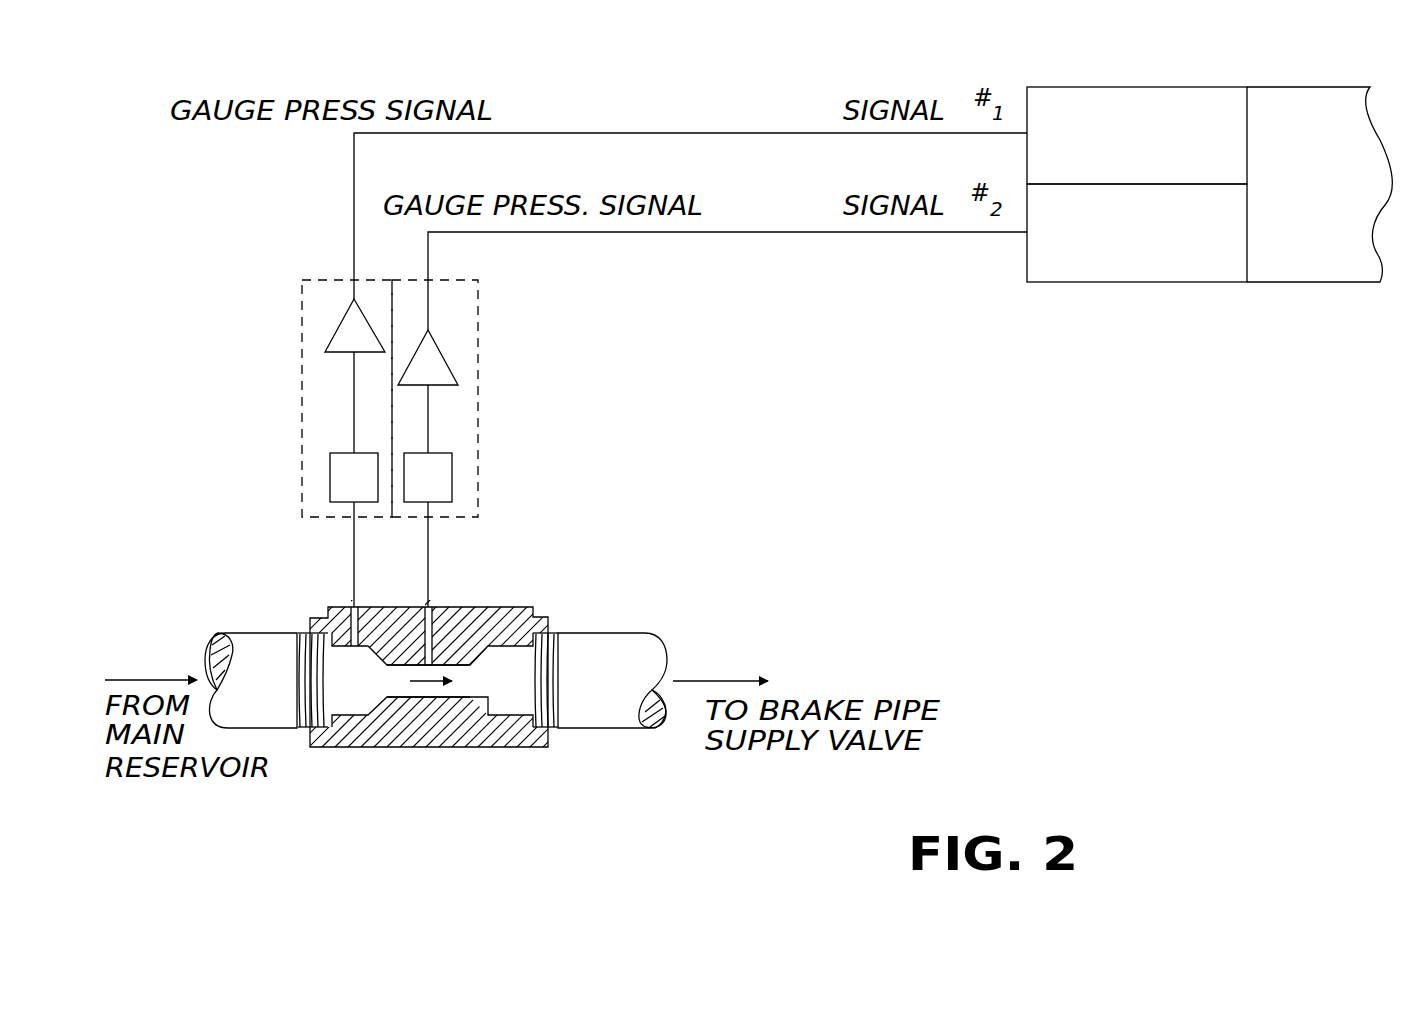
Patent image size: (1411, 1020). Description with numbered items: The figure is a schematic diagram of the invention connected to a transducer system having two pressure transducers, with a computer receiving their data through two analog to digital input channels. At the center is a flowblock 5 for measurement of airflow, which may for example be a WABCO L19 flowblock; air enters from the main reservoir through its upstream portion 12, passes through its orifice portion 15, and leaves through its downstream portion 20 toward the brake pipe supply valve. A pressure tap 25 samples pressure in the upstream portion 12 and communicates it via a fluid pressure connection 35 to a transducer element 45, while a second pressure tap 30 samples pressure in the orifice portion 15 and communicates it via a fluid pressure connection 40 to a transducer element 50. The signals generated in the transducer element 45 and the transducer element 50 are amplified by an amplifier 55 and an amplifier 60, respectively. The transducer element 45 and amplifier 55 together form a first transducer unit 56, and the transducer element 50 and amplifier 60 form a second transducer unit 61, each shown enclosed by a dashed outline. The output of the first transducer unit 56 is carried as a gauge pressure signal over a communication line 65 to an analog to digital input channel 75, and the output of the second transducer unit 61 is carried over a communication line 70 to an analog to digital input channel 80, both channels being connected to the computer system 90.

The flowblock 5 is at (322, 756).
The upstream portion 12 is at (335, 683).
The orifice portion 15 is at (406, 666).
The downstream portion 20 is at (523, 681).
The pressure tap 25 is at (352, 620).
The pressure tap 30 is at (443, 618).
The fluid pressure connection 35 is at (352, 540).
The fluid pressure connection 40 is at (430, 541).
The transducer element 45 is at (330, 477).
The transducer element 50 is at (452, 477).
The amplifier 55 is at (330, 350).
The first transducer unit 56 is at (299, 323).
The amplifier 60 is at (452, 388).
The second transducer unit 61 is at (481, 323).
The communication line 65 is at (622, 133).
The communication line 70 is at (757, 235).
The analog to digital input channel 75 is at (1133, 98).
The analog to digital input channel 80 is at (1135, 268).
The computer system 90 is at (1315, 268).